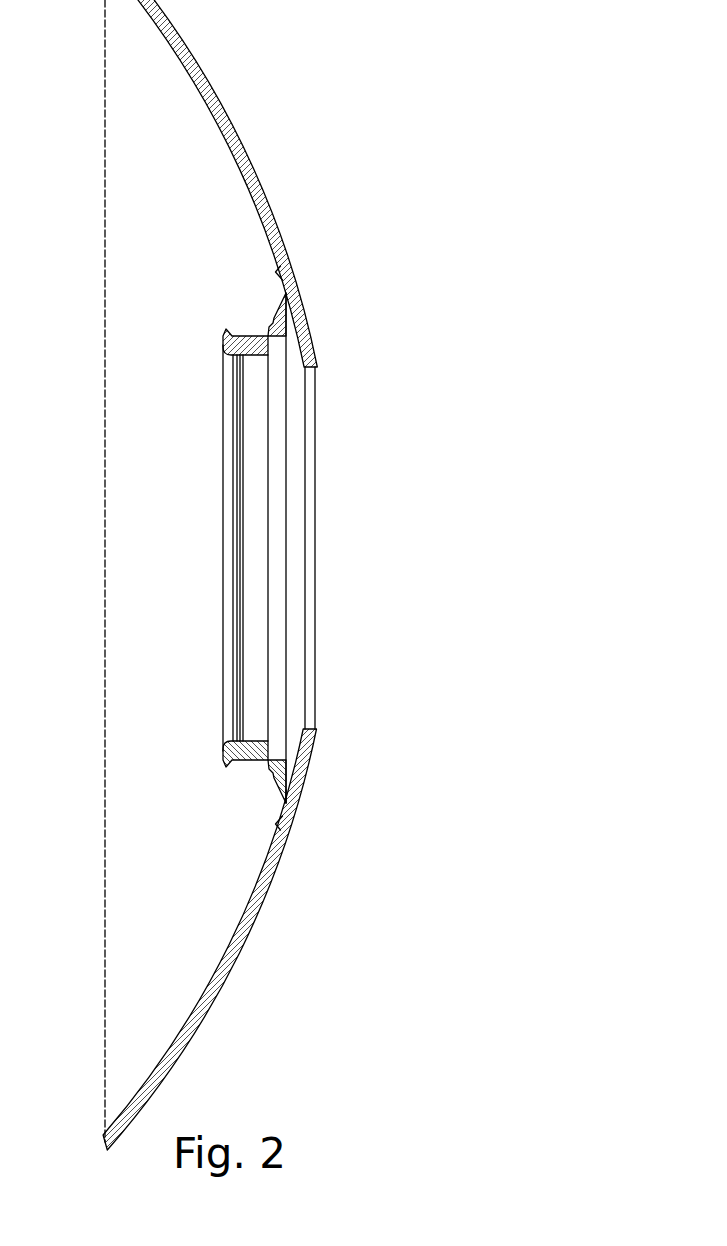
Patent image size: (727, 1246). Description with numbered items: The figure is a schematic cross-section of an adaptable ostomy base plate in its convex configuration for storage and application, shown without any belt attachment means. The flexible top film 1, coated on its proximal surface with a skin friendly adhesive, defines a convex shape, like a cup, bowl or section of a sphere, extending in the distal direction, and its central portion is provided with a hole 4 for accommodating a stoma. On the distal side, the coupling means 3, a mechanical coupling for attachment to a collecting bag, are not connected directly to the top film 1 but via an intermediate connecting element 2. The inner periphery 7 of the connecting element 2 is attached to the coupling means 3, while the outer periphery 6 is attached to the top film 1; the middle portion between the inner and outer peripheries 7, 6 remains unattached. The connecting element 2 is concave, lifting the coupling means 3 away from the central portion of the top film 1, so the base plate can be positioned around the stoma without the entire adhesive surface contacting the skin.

The top film 1 is at (208, 163).
The connecting element 2 is at (282, 303).
The coupling means 3 is at (226, 344).
The hole 4 is at (317, 540).
The outer periphery 6 is at (282, 808).
The inner periphery 7 is at (278, 771).